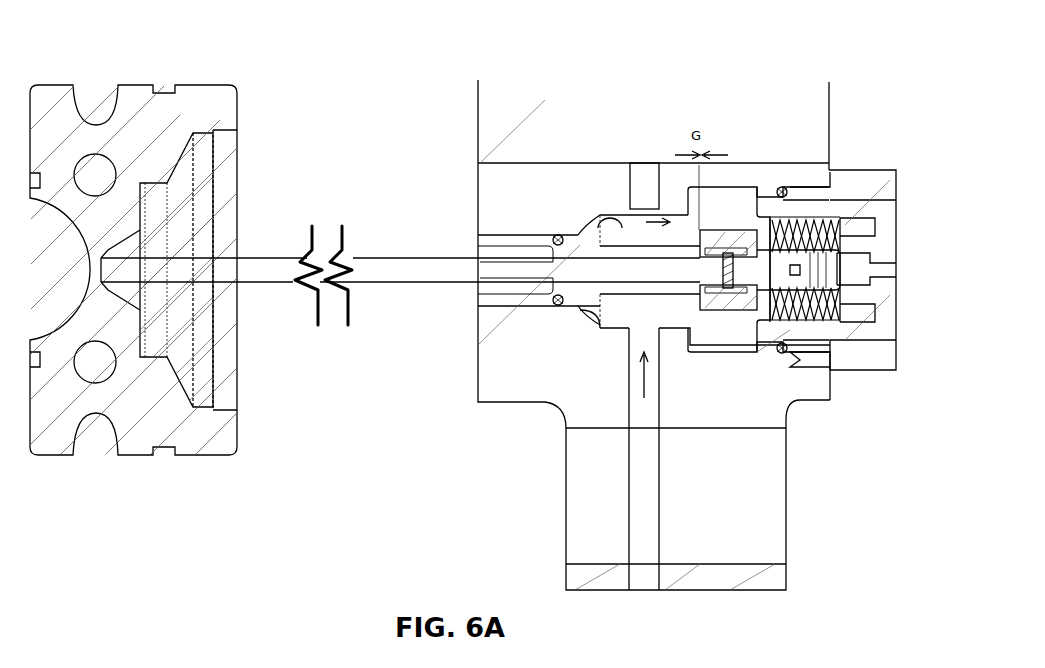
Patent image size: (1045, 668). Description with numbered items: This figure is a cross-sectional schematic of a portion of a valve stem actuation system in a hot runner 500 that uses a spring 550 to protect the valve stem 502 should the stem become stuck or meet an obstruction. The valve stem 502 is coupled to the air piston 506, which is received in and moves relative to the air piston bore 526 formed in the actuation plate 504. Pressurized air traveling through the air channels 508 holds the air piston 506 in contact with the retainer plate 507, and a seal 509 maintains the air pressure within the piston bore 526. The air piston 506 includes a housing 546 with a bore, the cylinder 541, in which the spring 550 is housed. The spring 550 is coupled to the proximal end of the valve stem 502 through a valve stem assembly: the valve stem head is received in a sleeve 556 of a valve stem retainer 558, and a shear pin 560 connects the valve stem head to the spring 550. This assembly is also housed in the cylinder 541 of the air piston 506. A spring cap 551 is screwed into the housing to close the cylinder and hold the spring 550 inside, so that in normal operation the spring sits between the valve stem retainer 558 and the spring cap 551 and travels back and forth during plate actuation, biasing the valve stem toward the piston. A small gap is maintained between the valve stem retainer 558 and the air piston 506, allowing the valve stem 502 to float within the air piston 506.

The hot runner 500 is at (750, 60).
The valve stem 502 is at (158, 272).
The actuation plate 504 is at (497, 358).
The air piston 506 is at (785, 355).
The retainer plate 507 is at (852, 368).
The air channels 508 is at (612, 228).
The seal 509 is at (787, 352).
The air piston bore 526 is at (703, 345).
The cylinder 541 is at (855, 185).
The housing 546 is at (790, 190).
The spring 550 is at (828, 190).
The spring cap 551 is at (887, 297).
The sleeve 556 is at (705, 255).
The valve stem retainer 558 is at (716, 300).
The shear pin 560 is at (767, 270).